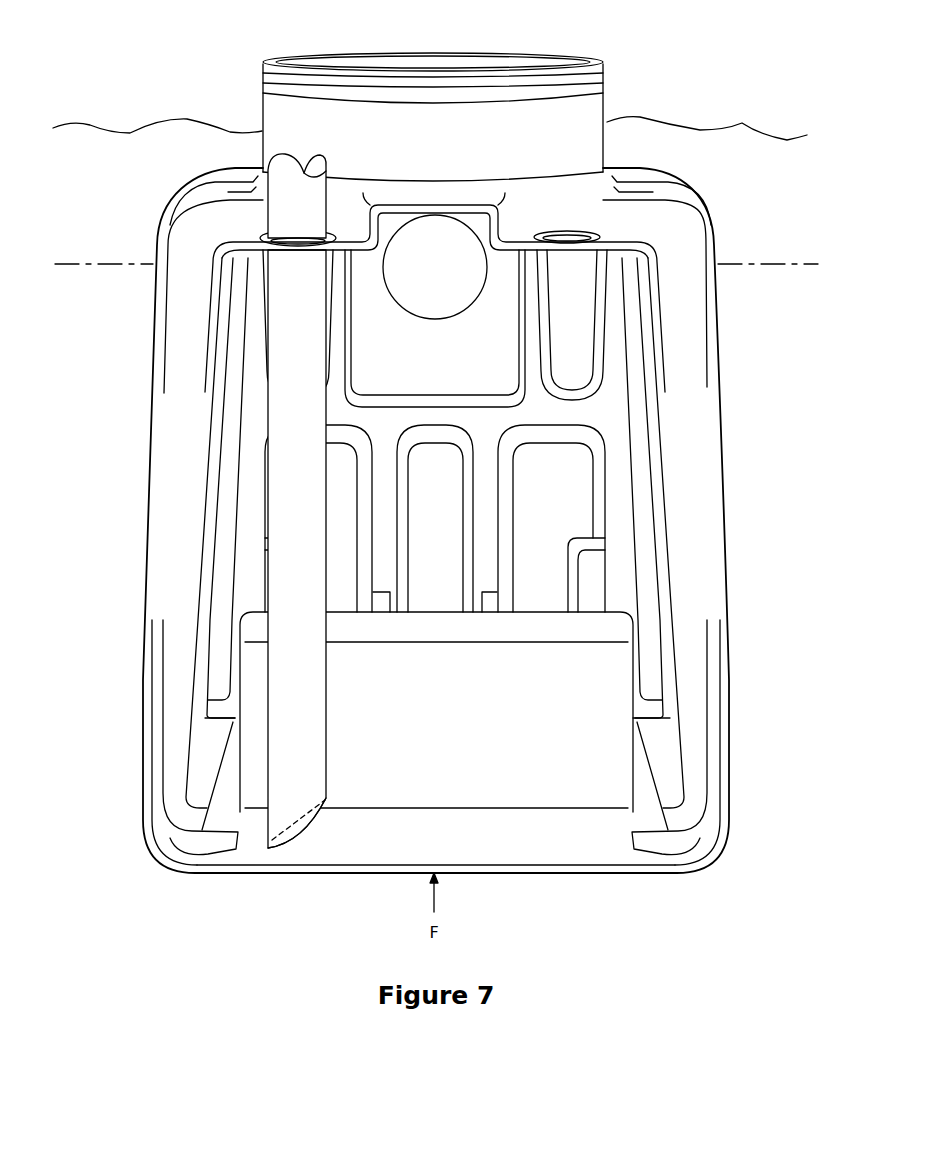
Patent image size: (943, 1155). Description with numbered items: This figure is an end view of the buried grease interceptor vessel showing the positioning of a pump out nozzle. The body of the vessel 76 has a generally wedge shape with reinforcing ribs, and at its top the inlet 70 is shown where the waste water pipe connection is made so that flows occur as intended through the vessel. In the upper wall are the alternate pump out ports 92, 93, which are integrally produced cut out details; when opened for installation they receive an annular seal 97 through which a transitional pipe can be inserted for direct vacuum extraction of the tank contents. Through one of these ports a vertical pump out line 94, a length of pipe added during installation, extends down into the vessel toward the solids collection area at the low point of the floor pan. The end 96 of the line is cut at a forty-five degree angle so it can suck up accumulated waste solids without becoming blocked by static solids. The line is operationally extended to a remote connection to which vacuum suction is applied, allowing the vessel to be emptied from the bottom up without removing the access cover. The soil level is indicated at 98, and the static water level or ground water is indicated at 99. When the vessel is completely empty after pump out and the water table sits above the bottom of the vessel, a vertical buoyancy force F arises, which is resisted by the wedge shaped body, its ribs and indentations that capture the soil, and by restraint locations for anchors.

The inlet 70 is at (422, 279).
The base housing 76 is at (362, 875).
The pump out port 92 is at (580, 238).
The pump out port 93 is at (395, 470).
The vertical pump out line 94 is at (268, 822).
The end of pump out line 96 is at (300, 834).
The flange 97 is at (262, 232).
The soil level 98 is at (143, 128).
The static water level 99 is at (125, 266).